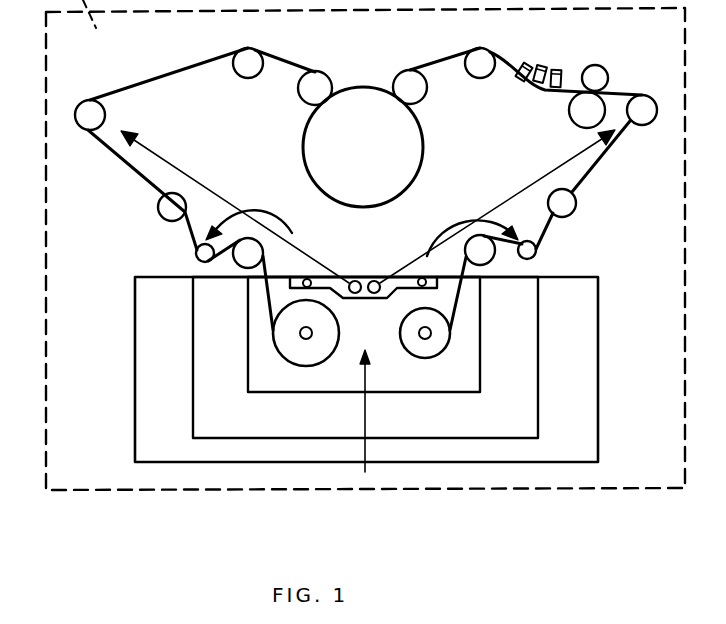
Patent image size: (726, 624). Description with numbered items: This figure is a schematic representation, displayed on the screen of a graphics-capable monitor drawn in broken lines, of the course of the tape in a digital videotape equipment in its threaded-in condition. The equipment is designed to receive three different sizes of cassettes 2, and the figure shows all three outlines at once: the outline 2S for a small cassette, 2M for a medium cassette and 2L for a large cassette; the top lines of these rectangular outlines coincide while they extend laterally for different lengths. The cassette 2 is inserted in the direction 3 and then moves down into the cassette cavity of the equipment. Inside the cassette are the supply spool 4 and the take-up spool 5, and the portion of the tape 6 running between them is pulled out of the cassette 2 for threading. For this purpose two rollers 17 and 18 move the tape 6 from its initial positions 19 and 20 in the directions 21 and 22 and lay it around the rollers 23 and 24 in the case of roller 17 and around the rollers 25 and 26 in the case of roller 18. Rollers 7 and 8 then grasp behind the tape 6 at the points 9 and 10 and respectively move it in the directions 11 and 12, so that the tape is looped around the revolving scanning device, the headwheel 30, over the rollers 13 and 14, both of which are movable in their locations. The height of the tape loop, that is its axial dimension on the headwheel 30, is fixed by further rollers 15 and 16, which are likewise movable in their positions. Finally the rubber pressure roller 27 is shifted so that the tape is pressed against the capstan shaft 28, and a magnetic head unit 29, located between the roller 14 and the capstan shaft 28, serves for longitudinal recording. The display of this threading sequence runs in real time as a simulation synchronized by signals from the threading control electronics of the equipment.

The cassette 2 is at (135, 378).
The large cassette outline 2L is at (600, 346).
The medium cassette outline 2M is at (540, 390).
The small cassette outline 2S is at (482, 346).
The insertion direction 3 is at (364, 414).
The supply spool 4 is at (288, 358).
The take-up spool 5 is at (438, 352).
The tape 6 is at (256, 312).
The roller 7 is at (88, 120).
The roller 8 is at (650, 120).
The tape grasping point 9 is at (355, 280).
The tape grasping point 10 is at (376, 280).
The direction of tape movement 11 is at (182, 172).
The direction of tape movement 12 is at (558, 168).
The movable roller 13 is at (250, 58).
The movable roller 14 is at (480, 54).
The roller 15 is at (323, 82).
The roller 16 is at (403, 80).
The roller 17 is at (197, 256).
The roller 18 is at (536, 252).
The initial tape position 19 is at (305, 279).
The initial tape position 20 is at (424, 278).
The direction of movement 21 is at (292, 231).
The direction of movement 22 is at (466, 222).
The roller 23 is at (247, 262).
The roller 24 is at (163, 208).
The roller 25 is at (484, 262).
The roller 26 is at (576, 203).
The rubber pressure roller 27 is at (571, 110).
The capstan shaft 28 is at (600, 78).
The magnetic head unit 29 is at (522, 62).
The headwheel 30 is at (403, 158).